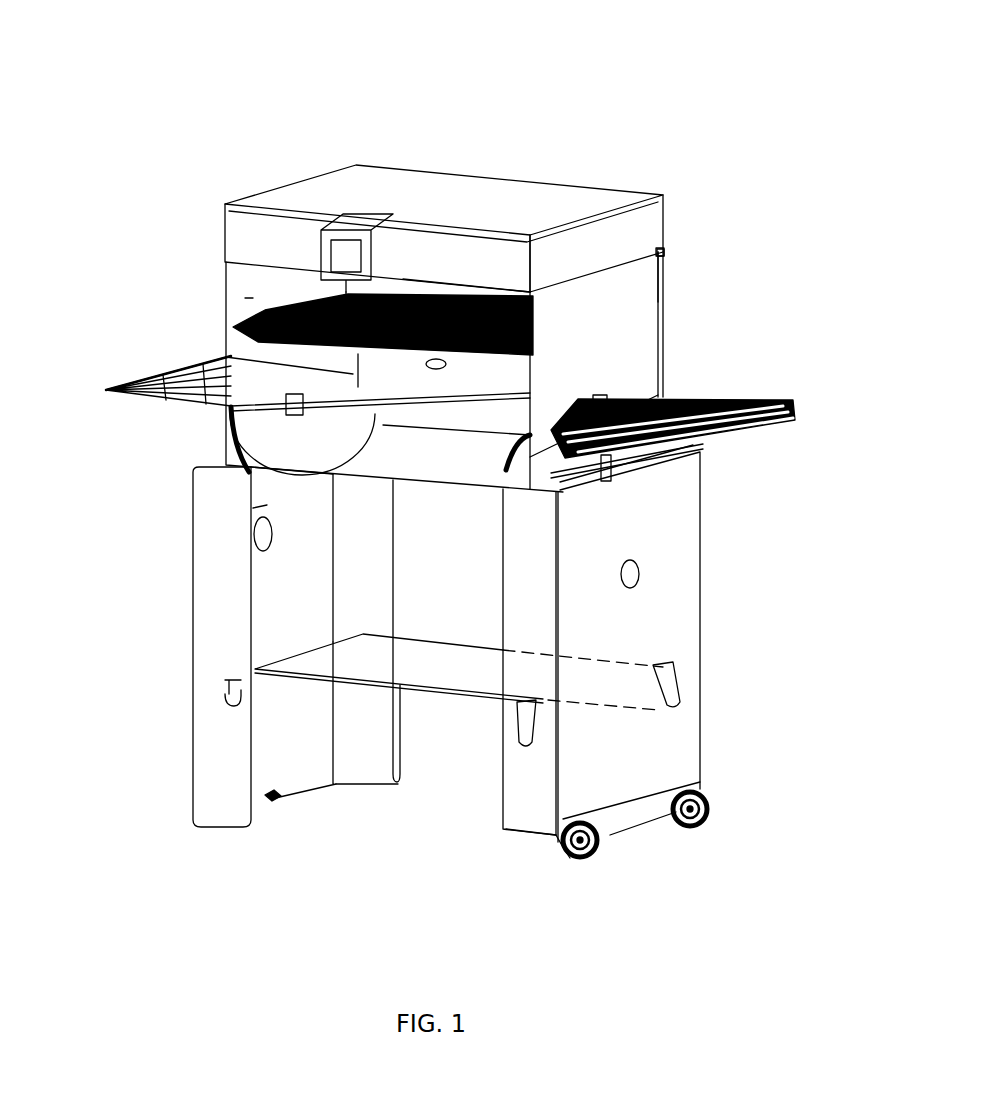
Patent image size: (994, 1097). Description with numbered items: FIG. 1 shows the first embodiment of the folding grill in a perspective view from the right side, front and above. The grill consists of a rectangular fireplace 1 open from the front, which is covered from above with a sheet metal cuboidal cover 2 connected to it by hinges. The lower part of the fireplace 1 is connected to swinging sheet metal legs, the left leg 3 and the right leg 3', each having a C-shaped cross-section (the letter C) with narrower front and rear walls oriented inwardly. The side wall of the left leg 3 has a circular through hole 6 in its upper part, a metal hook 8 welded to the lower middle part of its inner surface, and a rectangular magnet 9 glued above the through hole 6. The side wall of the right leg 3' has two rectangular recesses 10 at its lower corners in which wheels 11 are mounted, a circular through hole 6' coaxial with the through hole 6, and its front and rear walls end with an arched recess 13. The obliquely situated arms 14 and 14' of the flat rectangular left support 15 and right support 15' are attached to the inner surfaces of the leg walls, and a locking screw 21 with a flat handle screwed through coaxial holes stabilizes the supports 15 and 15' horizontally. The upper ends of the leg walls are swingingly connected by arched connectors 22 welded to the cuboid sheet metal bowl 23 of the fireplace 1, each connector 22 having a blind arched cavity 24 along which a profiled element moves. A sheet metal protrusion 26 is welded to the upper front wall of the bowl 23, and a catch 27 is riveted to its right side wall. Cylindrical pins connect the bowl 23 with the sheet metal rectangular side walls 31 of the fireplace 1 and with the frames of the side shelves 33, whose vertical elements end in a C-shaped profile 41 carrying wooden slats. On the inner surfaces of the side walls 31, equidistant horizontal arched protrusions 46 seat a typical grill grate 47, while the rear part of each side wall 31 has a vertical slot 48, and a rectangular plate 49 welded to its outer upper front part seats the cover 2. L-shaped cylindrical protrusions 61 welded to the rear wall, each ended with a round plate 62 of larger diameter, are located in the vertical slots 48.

The fireplace 1 is at (458, 412).
The cover 2 is at (330, 190).
The left leg 3 is at (170, 647).
The right leg 3' is at (685, 651).
The circular through hole 6 is at (170, 577).
The circular through hole 6' is at (747, 596).
The metal hook 8 is at (268, 798).
The rectangular magnet 9 is at (255, 520).
The rectangular recesses 10 is at (690, 785).
The wheels 11 is at (693, 820).
The arched recess 13 is at (540, 847).
The arms 14 is at (126, 743).
The arms 14' is at (561, 785).
The left support 15 is at (312, 775).
The right support 15' is at (401, 694).
The locking screw 21 is at (477, 683).
The arched connectors 22 is at (228, 458).
The bowl 23 is at (470, 473).
The blind arched cavity 24 is at (226, 447).
The sheet metal protrusion 26 is at (262, 513).
The catch 27 is at (600, 470).
The side walls 31 is at (277, 370).
The side shelves 33 is at (763, 410).
The profile 41 is at (640, 433).
The horizontal arched protrusions 46 is at (190, 392).
The grill grate 47 is at (533, 283).
The vertical slot 48 is at (660, 317).
The rectangular plate 49 is at (555, 283).
The cylindrical protrusions 61 is at (660, 253).
The round plate 62 is at (721, 200).
The hood handle C is at (247, 320).